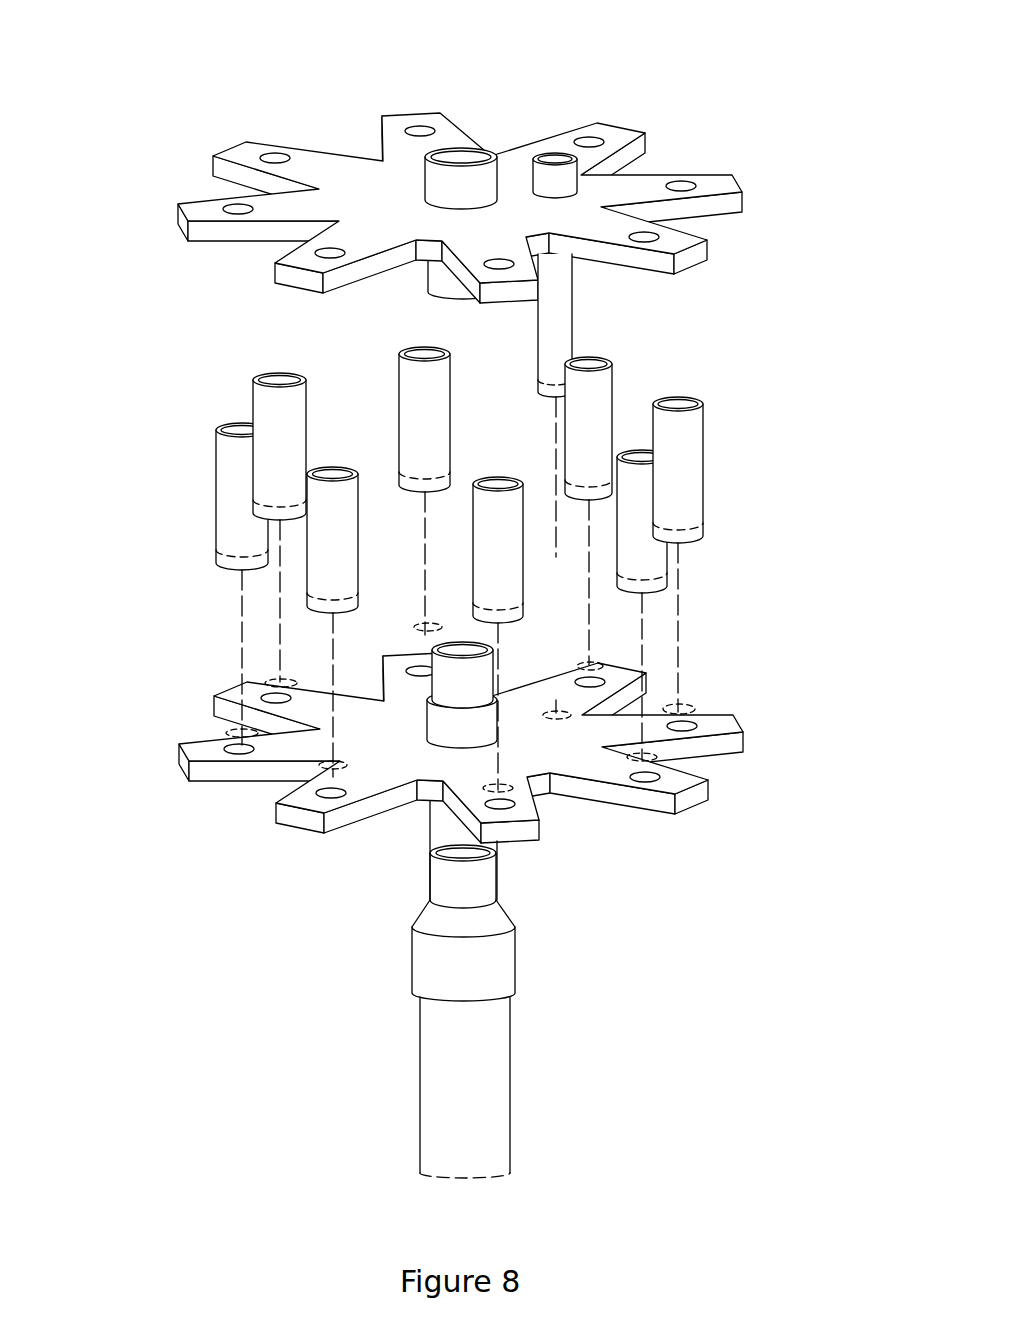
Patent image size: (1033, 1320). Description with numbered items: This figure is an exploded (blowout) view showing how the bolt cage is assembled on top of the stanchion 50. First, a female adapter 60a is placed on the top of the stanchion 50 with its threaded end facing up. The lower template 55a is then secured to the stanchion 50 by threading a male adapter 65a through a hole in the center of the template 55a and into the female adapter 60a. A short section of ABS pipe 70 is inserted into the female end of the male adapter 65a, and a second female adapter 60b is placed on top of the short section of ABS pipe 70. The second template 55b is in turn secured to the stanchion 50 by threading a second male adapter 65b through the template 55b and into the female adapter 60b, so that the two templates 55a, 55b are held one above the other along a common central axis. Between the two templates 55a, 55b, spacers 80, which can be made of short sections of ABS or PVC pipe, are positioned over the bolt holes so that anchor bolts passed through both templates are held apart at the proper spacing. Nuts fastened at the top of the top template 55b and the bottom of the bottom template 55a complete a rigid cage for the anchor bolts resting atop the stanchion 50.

The stanchion 50 is at (465, 1087).
The template 55a is at (395, 767).
The second template 55b is at (393, 193).
The female adapter 60a is at (463, 923).
The female adapter 60b is at (437, 277).
The male adapter 65a is at (443, 817).
The male adapter 65b is at (461, 178).
The short section of ABS pipe 70 is at (462, 675).
The spacers 80 is at (459, 472).